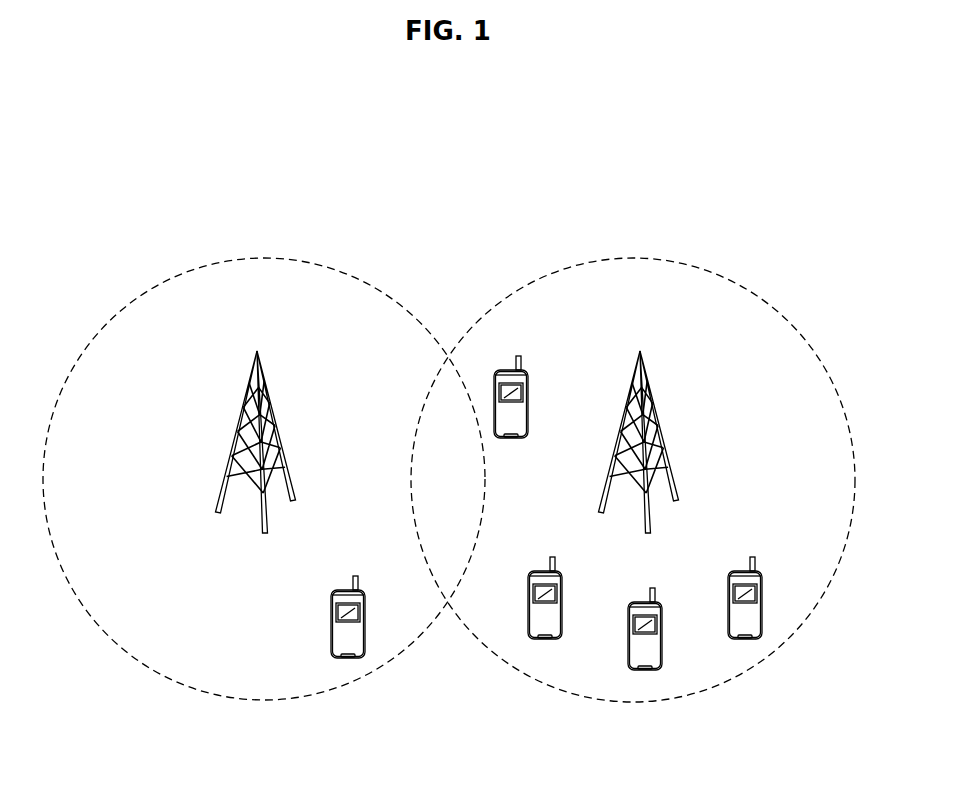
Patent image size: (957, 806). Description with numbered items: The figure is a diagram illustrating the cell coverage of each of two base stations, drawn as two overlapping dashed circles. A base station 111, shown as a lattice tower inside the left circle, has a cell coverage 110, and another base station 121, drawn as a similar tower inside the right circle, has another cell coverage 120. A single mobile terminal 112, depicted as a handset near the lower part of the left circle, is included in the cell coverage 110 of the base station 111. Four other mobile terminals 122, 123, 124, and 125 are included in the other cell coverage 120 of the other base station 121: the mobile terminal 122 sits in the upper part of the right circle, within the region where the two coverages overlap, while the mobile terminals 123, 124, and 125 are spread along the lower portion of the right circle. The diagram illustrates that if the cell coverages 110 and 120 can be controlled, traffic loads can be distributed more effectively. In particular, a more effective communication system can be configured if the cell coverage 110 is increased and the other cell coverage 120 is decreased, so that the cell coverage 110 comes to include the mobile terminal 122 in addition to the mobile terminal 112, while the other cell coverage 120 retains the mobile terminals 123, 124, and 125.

The cell coverage 110 is at (266, 258).
The base station 111 is at (240, 422).
The mobile terminal 112 is at (350, 660).
The other cell coverage 120 is at (632, 258).
The other base station 121 is at (658, 417).
The mobile terminal 122 is at (510, 370).
The mobile terminal 123 is at (548, 640).
The mobile terminal 124 is at (648, 670).
The mobile terminal 125 is at (745, 640).